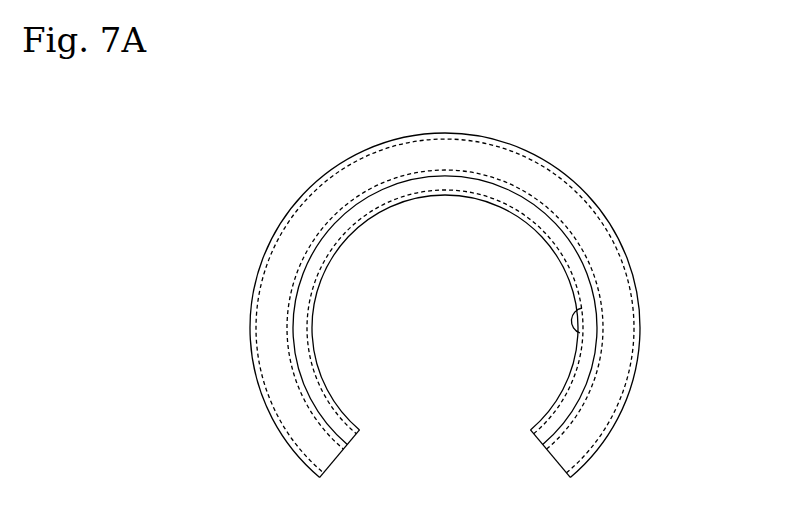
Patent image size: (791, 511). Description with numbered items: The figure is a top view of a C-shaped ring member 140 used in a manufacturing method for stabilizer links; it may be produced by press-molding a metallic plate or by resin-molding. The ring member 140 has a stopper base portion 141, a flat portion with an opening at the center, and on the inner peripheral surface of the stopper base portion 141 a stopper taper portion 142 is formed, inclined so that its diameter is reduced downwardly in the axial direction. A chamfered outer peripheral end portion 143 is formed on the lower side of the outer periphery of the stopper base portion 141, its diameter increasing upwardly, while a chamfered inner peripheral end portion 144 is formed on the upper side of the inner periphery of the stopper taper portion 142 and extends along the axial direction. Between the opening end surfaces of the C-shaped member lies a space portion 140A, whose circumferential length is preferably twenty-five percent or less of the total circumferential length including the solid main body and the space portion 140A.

The ring member 140 is at (598, 163).
The space portion 140A is at (477, 498).
The stopper base portion 141 is at (613, 258).
The stopper taper portion 142 is at (487, 193).
The outer peripheral end portion 143 is at (640, 375).
The inner peripheral end portion 144 is at (582, 309).